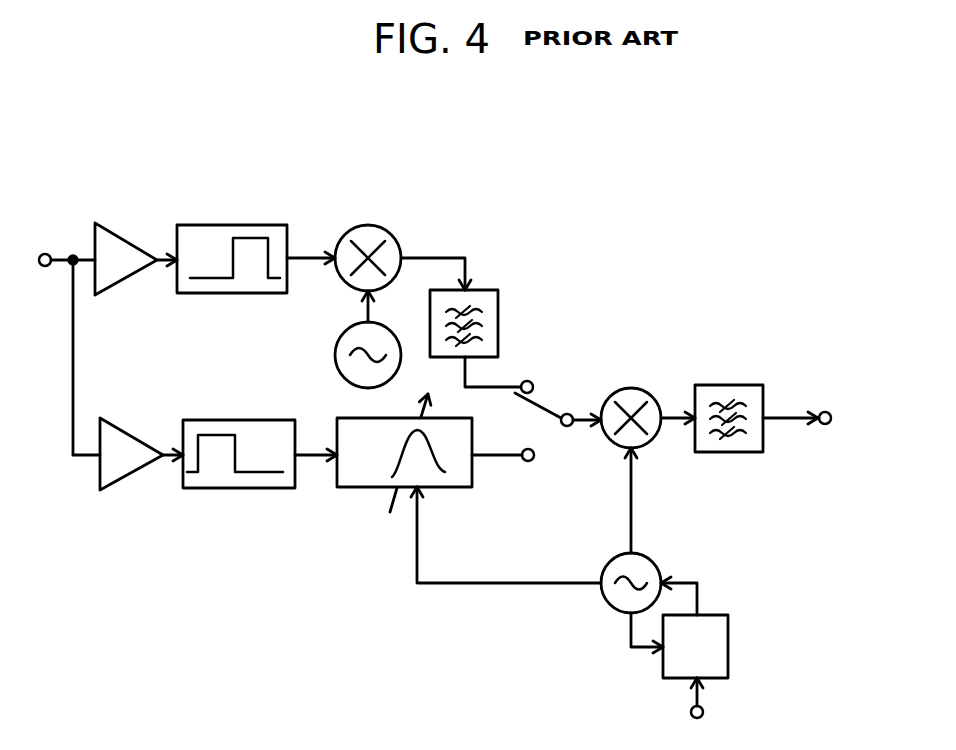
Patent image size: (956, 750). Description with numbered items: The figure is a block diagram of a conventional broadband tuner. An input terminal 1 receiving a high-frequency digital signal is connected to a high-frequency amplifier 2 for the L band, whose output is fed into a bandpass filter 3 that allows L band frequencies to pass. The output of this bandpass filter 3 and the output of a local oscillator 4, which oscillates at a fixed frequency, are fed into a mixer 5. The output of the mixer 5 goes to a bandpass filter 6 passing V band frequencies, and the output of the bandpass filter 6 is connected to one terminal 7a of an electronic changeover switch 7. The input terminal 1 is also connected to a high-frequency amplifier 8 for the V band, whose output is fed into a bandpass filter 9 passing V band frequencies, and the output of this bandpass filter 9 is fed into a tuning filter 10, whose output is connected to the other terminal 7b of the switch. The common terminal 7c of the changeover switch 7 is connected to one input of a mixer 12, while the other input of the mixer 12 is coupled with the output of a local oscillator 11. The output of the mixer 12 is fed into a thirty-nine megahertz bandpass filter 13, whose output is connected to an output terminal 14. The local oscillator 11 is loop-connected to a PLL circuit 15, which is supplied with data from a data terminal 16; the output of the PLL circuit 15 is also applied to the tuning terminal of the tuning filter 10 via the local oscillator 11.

The input terminal 1 is at (48, 246).
The high-frequency amplifier 2 is at (120, 228).
The bandpass filter 3 is at (235, 225).
The local oscillator 4 is at (338, 336).
The mixer 5 is at (370, 225).
The bandpass filter 6 is at (500, 301).
The electronic changeover switch 7 is at (548, 397).
The terminal 7a is at (530, 376).
The terminal 7b is at (527, 467).
The common terminal 7c is at (572, 435).
The high-frequency amplifier 8 is at (130, 474).
The bandpass filter 9 is at (260, 493).
The tuning filter 10 is at (365, 490).
The local oscillator 11 is at (653, 558).
The mixer 12 is at (645, 384).
The bandpass filter 13 is at (726, 385).
The output terminal 14 is at (829, 406).
The PLL circuit 15 is at (730, 632).
The data terminal 16 is at (707, 708).